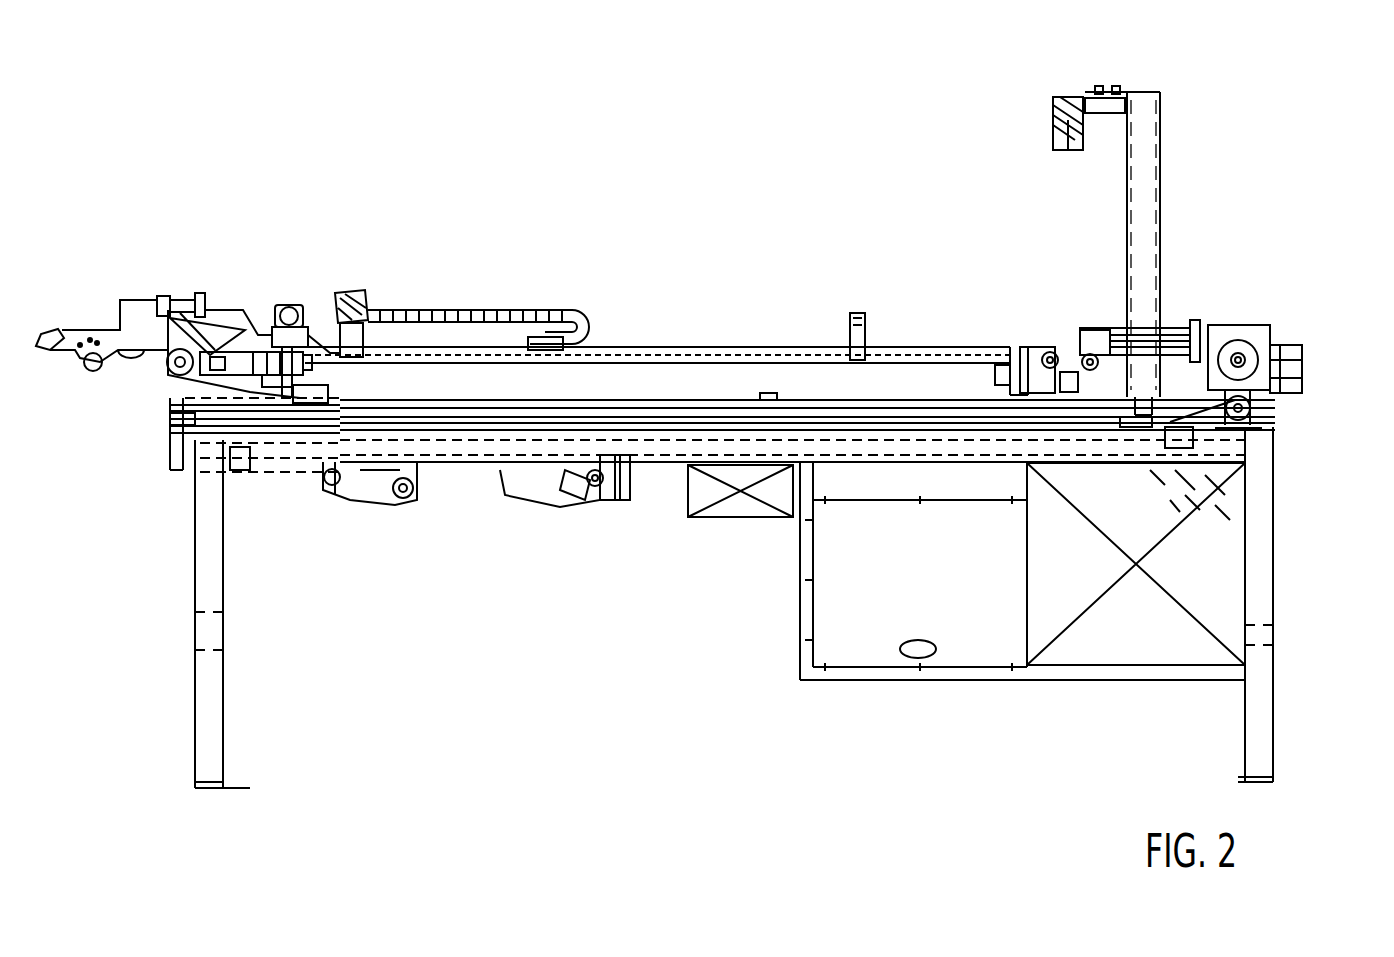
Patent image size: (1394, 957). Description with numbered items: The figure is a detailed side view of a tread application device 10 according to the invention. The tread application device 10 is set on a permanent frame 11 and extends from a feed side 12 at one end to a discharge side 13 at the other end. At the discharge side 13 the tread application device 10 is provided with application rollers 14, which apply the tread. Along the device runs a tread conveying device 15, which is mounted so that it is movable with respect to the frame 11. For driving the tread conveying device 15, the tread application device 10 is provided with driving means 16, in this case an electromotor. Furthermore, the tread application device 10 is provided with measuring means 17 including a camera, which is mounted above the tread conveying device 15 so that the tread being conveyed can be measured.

The tread application device 10 is at (707, 200).
The permanent frame 11 is at (215, 728).
The feed side 12 is at (1314, 295).
The discharge side 13 is at (71, 292).
The application rollers 14 is at (94, 408).
The tread conveying device 15 is at (772, 347).
The driving means 16 is at (1180, 322).
The measuring means 17 is at (1053, 124).